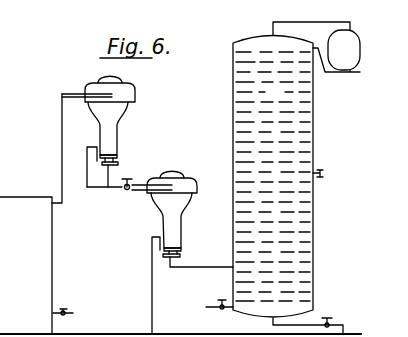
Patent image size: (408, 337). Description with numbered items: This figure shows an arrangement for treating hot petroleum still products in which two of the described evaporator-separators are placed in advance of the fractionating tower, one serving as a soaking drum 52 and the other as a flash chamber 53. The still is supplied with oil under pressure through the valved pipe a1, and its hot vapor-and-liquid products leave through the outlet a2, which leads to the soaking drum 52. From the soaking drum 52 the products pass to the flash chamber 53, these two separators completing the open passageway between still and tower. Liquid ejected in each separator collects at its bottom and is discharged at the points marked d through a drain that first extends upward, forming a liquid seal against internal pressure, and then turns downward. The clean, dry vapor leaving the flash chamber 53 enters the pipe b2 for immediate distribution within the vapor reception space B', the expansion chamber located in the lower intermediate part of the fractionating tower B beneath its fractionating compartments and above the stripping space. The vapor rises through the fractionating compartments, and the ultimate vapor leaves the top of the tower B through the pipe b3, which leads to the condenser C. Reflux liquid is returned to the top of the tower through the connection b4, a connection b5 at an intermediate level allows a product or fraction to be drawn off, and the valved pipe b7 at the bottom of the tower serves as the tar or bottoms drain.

The soaking drum 52 is at (116, 118).
The flash chamber 53 is at (178, 221).
The valved pipe a1 is at (55, 313).
The hot vapor-and-liquid outlet a2 is at (57, 205).
The pipe b2 is at (214, 263).
The pipe b3 is at (252, 31).
The connection b4 is at (334, 73).
The connection b5 is at (323, 171).
The valved pipe b7 is at (335, 324).
The fractionating tower B is at (273, 177).
The vapor reception space B' is at (273, 283).
The condenser C is at (344, 50).
The drain d is at (148, 244).